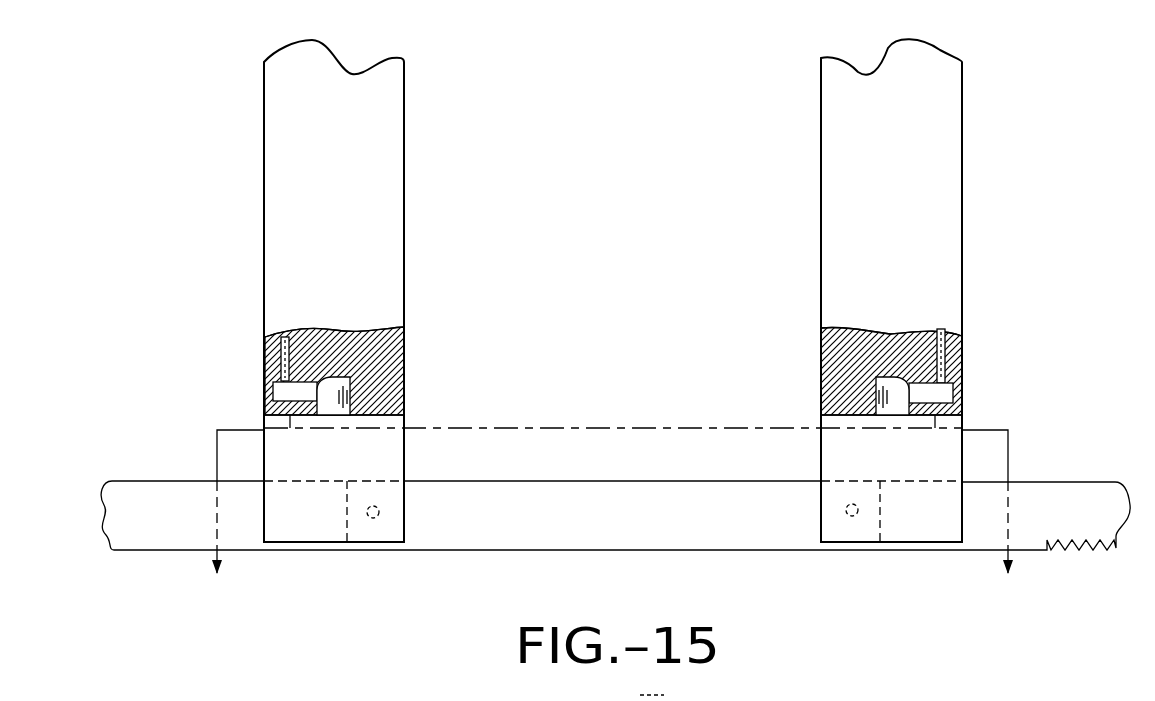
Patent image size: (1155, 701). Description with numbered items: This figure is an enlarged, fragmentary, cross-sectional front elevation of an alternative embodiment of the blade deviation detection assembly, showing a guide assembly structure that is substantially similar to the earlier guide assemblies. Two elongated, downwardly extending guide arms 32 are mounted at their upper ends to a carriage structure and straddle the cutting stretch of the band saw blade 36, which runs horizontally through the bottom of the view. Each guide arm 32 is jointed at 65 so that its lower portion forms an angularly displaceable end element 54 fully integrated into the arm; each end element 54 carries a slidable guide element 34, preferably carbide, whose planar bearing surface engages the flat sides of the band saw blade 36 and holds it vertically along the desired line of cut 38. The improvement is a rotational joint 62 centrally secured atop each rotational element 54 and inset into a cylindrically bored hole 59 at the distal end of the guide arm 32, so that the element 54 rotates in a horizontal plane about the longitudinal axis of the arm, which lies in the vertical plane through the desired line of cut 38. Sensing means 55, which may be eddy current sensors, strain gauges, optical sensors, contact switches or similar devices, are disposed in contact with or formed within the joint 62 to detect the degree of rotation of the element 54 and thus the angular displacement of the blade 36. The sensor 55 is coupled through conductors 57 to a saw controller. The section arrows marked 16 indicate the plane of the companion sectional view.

The section line 16 is at (613, 523).
The guide arm 32 is at (804, 115).
The guide element 34 is at (377, 532).
The band saw blade 36 is at (555, 551).
The desired line of cut 38 is at (667, 692).
The angularly displaceable end element 54 is at (820, 458).
The sensing means 55 is at (275, 390).
The conductor 57 is at (265, 352).
The cylindrically bored hole 59 is at (330, 380).
The rotational joint 62 is at (820, 362).
The joint 65 is at (291, 420).